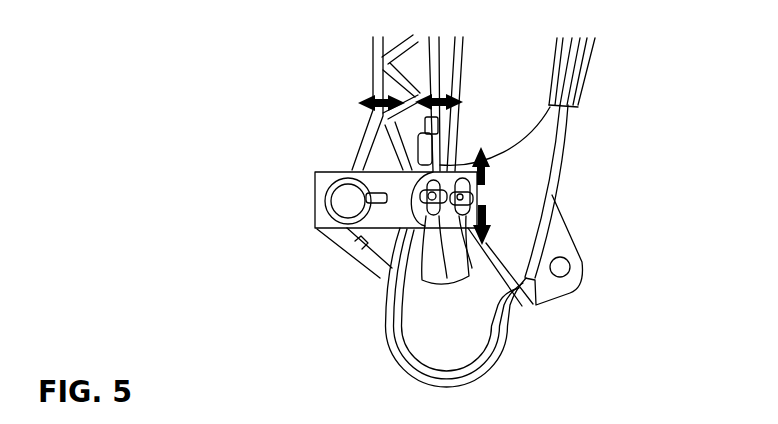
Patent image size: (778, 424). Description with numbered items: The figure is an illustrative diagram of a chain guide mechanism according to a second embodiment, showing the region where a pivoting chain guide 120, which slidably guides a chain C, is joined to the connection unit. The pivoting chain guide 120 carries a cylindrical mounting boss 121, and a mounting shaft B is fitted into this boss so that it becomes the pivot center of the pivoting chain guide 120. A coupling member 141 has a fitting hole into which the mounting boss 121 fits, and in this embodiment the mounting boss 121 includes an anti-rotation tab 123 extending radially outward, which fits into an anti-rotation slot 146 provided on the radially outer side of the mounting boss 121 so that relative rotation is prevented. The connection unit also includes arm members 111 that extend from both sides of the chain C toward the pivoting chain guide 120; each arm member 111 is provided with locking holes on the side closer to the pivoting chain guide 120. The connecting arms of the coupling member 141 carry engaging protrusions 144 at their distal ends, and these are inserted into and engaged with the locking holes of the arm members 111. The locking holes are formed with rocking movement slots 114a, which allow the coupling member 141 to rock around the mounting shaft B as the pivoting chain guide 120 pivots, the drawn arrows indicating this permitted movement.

The pivoting chain guide 120 is at (382, 62).
The anti-rotation slot 146 is at (378, 190).
The coupling member 141 is at (315, 188).
The mounting shaft B is at (345, 201).
The mounting boss 121 is at (333, 234).
The anti-rotation tab 123 is at (357, 248).
The engaging protrusions 144 is at (462, 196).
The rocking movement slots 114a is at (445, 280).
The chain C is at (390, 331).
The arm members 111 is at (508, 165).